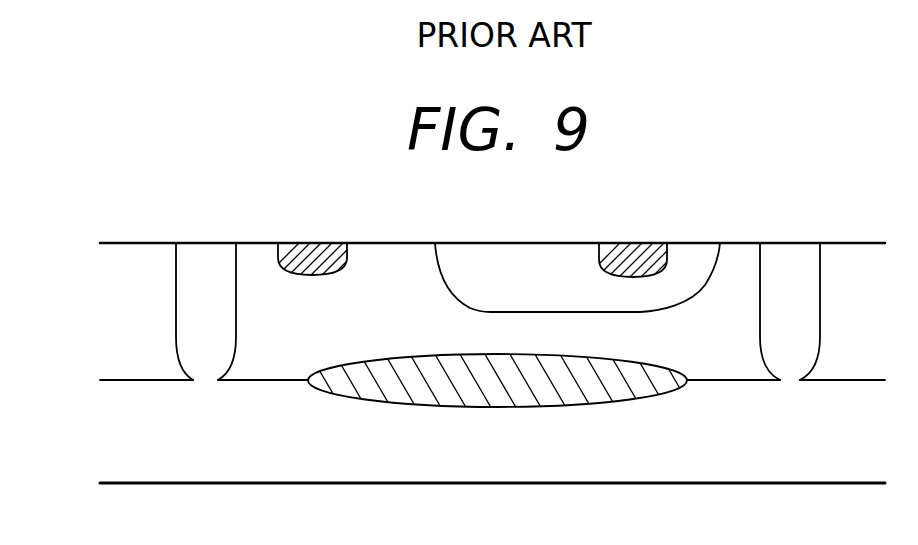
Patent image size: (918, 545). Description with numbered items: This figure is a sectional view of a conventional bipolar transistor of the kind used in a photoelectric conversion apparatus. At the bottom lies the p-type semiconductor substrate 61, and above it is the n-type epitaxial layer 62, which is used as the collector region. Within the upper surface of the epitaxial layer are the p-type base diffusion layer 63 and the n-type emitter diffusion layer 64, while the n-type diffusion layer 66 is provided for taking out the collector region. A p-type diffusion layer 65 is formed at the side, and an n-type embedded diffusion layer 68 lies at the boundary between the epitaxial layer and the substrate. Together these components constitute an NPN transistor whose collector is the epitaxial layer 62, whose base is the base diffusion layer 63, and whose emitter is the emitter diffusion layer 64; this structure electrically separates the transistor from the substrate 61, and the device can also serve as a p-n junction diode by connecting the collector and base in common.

The p-type semiconductor substrate 61 is at (236, 468).
The n-type epitaxial layer 62 is at (283, 350).
The p-type base diffusion layer 63 is at (320, 258).
The n-type emitter diffusion layer 64 is at (640, 257).
The p-type diffusion layer 65 is at (198, 262).
The n-type diffusion layer for taking out the collector region 66 is at (487, 262).
The n-type embedded diffusion layer 68 is at (435, 382).